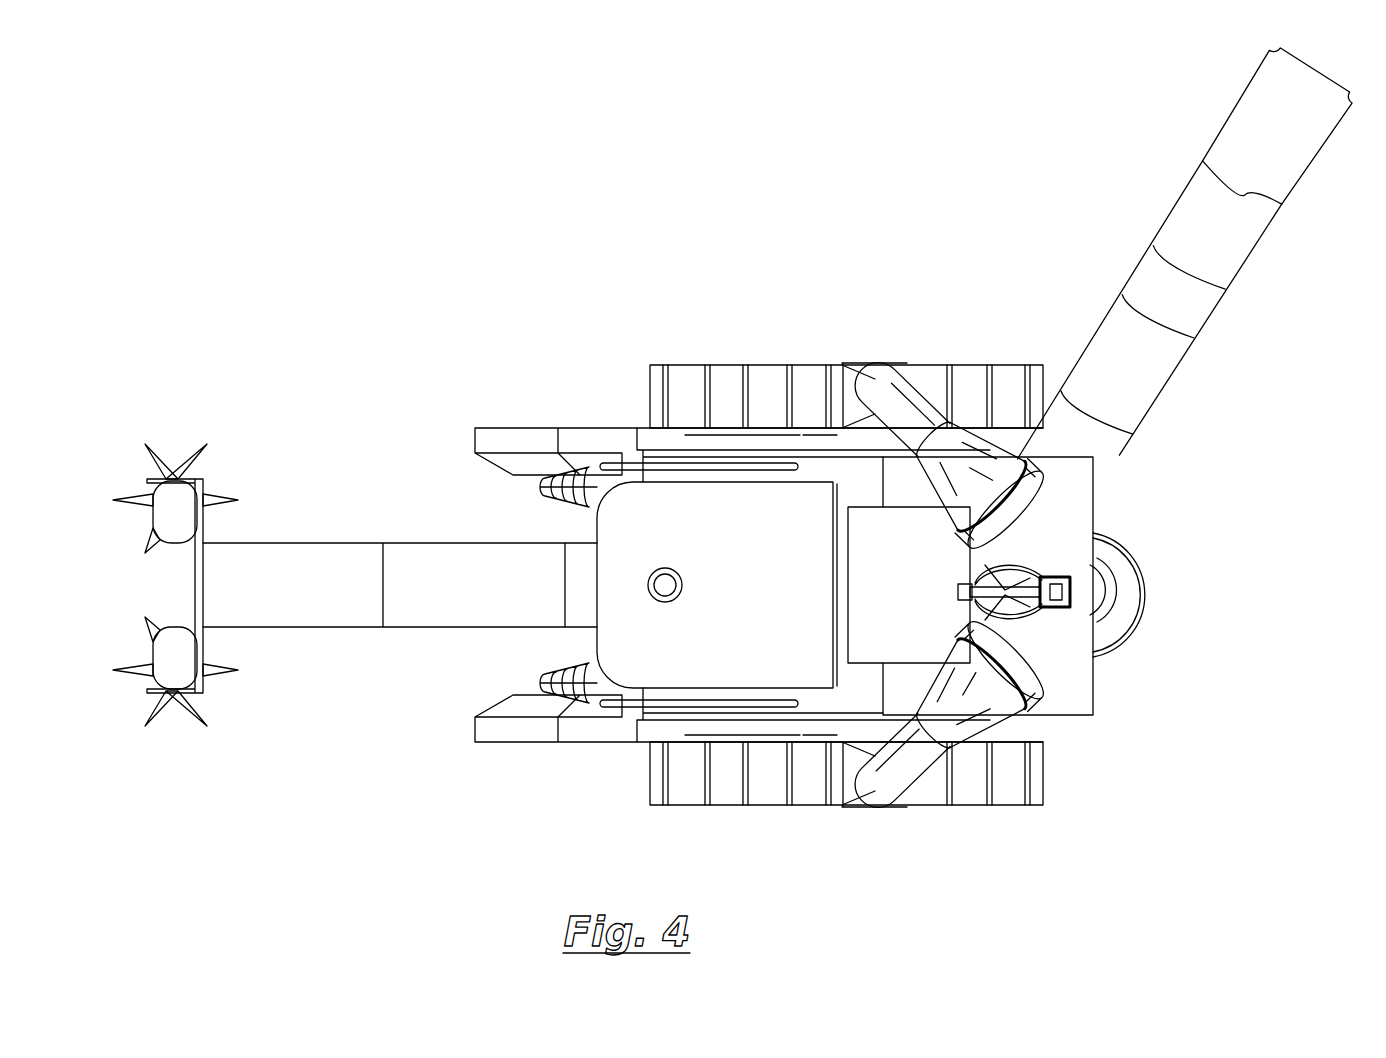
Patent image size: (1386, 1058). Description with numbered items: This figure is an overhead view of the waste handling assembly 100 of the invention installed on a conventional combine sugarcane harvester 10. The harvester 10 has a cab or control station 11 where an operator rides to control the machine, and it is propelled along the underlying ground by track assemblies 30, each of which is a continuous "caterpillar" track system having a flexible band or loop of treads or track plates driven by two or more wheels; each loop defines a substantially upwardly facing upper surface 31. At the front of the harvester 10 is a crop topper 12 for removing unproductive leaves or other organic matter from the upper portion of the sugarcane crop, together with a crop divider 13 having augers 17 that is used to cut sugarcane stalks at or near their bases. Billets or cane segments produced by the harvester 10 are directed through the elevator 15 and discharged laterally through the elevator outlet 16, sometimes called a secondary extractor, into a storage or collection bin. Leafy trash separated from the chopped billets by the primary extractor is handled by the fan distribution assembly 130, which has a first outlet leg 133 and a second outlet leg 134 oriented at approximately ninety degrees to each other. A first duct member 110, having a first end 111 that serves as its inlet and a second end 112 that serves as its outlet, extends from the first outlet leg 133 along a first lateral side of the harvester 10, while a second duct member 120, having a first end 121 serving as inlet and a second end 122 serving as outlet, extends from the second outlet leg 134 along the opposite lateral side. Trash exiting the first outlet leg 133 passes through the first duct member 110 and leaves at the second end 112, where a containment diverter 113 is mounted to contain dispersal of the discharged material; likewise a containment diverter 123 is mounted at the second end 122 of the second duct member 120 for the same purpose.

The sugarcane harvester 10 is at (716, 621).
The cab 11 is at (652, 518).
The crop topper 12 is at (205, 527).
The crop divider 13 is at (525, 740).
The elevator 15 is at (1190, 298).
The elevator outlet 16 is at (1266, 112).
The augers 17 is at (557, 502).
The track assemblies 30 is at (713, 406).
The upper surface 31 is at (778, 390).
The waste handling assembly 100 is at (1163, 610).
The first duct member 110 is at (1006, 739).
The first end 111 is at (1044, 698).
The second end 112 is at (893, 800).
The containment diverter 113 is at (852, 790).
The second duct member 120 is at (1024, 436).
The first end 121 is at (1027, 457).
The second end 122 is at (892, 366).
The containment diverter 123 is at (853, 383).
The fan distribution assembly 130 is at (1106, 577).
The first outlet leg 133 is at (1076, 650).
The second outlet leg 134 is at (1068, 525).